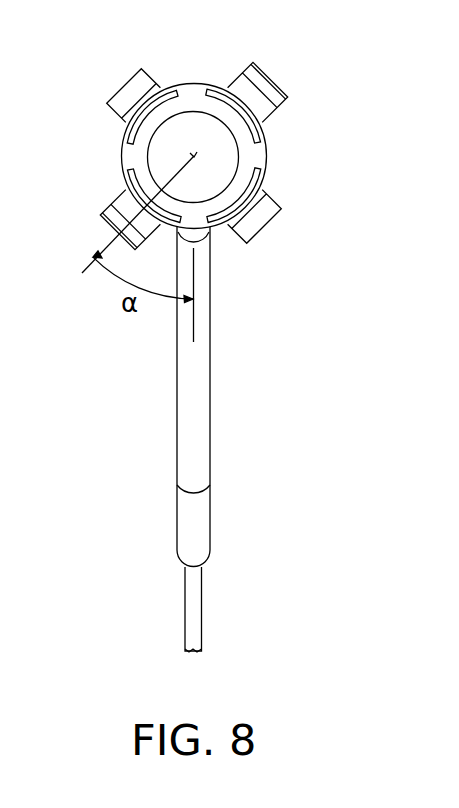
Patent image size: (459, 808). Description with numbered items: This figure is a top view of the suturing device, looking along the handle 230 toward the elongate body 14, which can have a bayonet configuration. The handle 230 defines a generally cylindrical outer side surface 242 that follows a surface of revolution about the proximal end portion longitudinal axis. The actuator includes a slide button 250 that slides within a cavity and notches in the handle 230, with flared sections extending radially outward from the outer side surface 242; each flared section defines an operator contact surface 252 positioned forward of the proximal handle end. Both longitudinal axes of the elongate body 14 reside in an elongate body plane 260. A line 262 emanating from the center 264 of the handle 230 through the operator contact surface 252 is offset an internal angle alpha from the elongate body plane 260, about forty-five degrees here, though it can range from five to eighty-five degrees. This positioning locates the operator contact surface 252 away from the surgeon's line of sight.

The elongate body 14 is at (205, 307).
The handle 230 is at (237, 126).
The outer side surface 242 is at (195, 83).
The slide button 250 is at (274, 82).
The operator contact surface 252 is at (262, 96).
The elongate body plane 260 is at (195, 335).
The line 262 is at (174, 195).
The center 264 is at (194, 157).